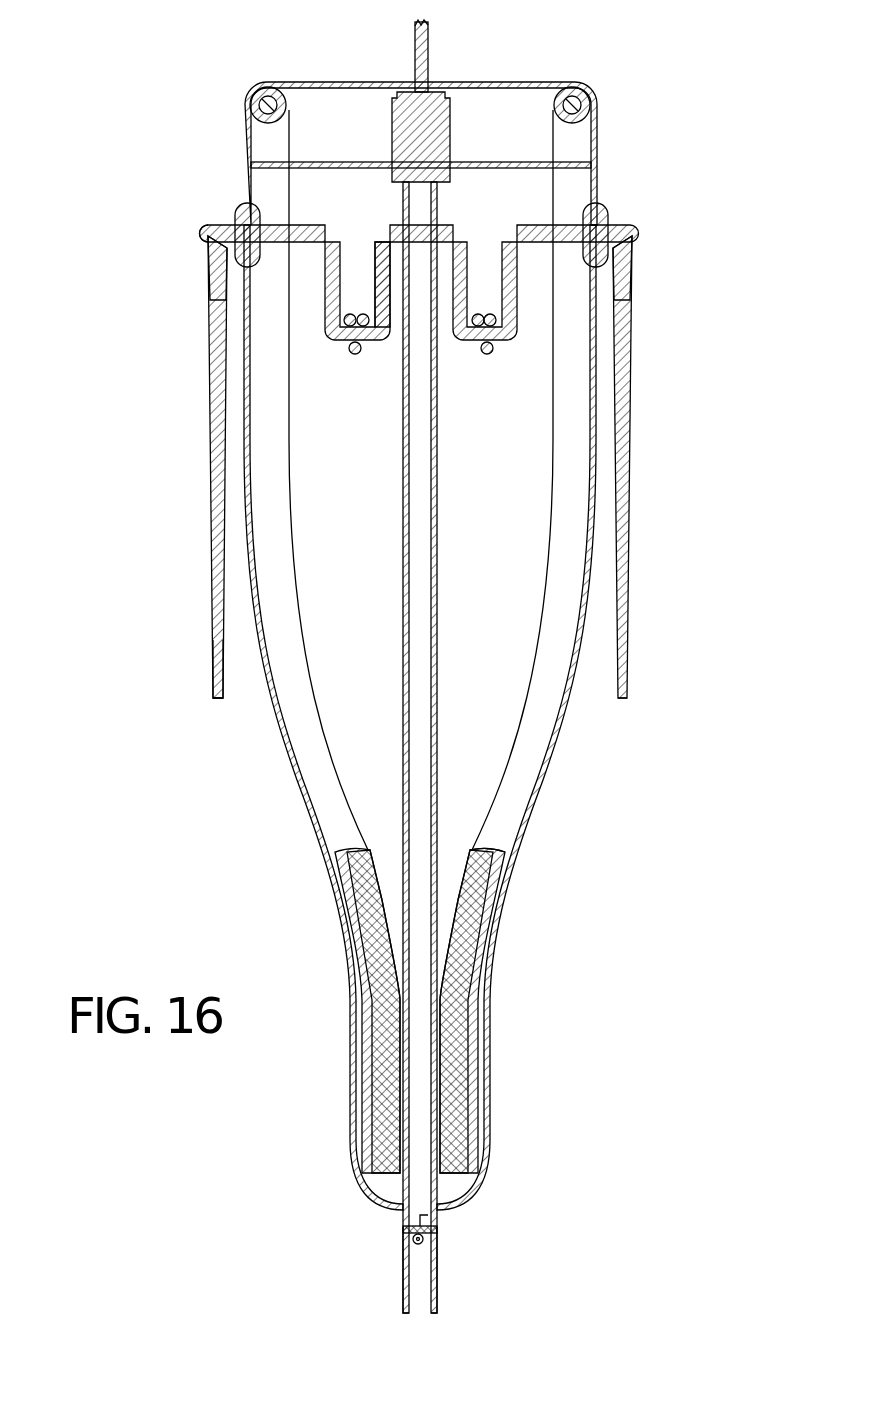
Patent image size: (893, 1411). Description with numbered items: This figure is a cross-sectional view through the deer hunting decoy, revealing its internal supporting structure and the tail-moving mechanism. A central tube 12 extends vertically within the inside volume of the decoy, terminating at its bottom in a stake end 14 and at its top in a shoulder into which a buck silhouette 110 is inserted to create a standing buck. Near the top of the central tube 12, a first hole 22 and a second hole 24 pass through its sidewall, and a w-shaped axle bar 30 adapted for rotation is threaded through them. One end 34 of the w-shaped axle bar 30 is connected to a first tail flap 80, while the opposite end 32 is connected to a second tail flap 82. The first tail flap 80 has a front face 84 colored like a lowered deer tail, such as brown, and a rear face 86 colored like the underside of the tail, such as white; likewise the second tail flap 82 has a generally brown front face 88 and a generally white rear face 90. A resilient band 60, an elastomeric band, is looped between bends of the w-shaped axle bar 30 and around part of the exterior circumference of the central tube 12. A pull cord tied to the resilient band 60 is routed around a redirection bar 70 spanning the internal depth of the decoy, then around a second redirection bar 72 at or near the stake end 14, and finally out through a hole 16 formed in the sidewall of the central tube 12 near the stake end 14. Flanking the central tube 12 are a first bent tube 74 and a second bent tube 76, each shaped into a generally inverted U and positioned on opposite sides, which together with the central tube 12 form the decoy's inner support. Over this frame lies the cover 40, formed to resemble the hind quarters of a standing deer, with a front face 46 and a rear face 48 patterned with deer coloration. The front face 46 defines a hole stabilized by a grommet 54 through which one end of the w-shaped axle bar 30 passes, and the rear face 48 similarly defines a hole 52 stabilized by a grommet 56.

The buck silhouette 110 is at (415, 45).
The first bent tube 74 is at (262, 88).
The second bent tube 76 is at (587, 86).
The second hole 24 is at (395, 230).
The first hole 22 is at (455, 230).
The redirection bar 70 is at (573, 160).
The grommet 56 is at (240, 215).
The grommet 54 is at (607, 215).
The w-shaped axle bar 30 is at (532, 228).
The hole 52 is at (210, 228).
The one end of the w-shaped axle bar 34 is at (212, 262).
The opposite end of the w-shaped axle bar 32 is at (630, 255).
The resilient band 60 is at (487, 350).
The first tail flap 80 is at (628, 480).
The second tail flap 82 is at (215, 540).
The front face 84 is at (628, 590).
The front face 88 is at (216, 668).
The rear face 86 is at (612, 672).
The rear face 90 is at (223, 688).
The central tube 12 is at (438, 720).
The cover 40 is at (545, 785).
The rear face 48 is at (305, 825).
The front face 46 is at (520, 855).
The second redirection bar 72 is at (425, 1215).
The hole 16 is at (415, 1245).
The stake end 14 is at (437, 1292).